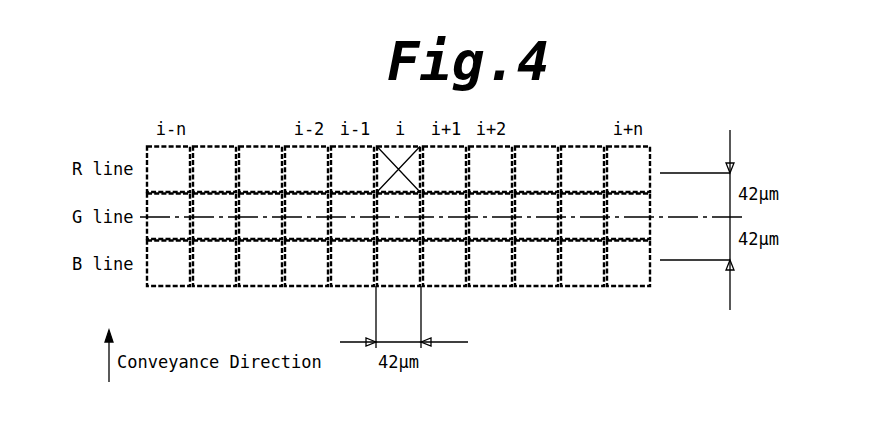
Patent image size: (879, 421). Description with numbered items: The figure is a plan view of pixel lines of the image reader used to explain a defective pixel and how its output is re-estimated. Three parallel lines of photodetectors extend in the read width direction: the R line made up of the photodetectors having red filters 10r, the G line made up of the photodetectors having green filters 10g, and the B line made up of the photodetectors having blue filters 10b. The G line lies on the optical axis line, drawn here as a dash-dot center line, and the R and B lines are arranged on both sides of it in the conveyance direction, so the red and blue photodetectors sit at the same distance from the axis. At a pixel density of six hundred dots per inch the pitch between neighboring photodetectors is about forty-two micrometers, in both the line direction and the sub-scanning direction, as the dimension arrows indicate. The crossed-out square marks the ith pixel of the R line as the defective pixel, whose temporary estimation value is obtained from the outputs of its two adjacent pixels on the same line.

The photodetectors having red filters 10r is at (533, 156).
The photodetectors having green filters 10g is at (540, 217).
The photodetectors having blue filters 10b is at (535, 282).